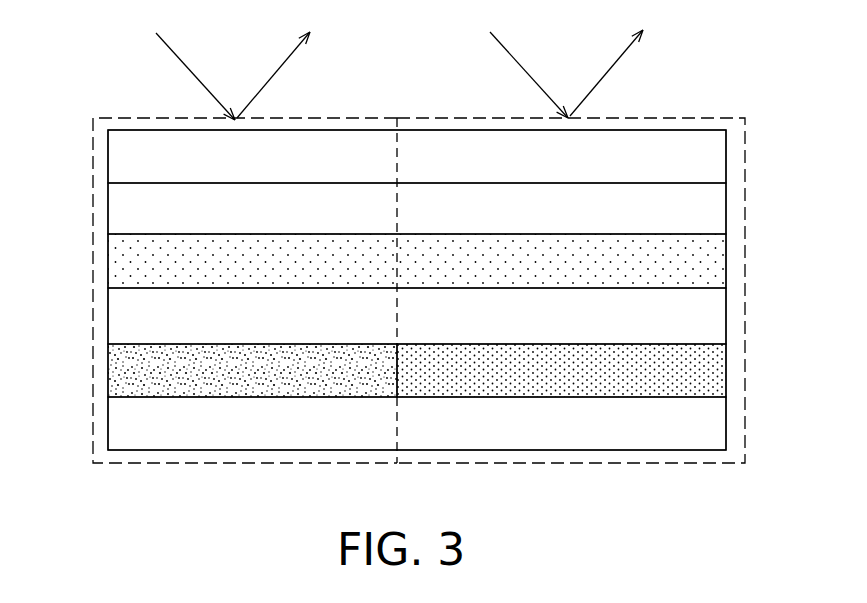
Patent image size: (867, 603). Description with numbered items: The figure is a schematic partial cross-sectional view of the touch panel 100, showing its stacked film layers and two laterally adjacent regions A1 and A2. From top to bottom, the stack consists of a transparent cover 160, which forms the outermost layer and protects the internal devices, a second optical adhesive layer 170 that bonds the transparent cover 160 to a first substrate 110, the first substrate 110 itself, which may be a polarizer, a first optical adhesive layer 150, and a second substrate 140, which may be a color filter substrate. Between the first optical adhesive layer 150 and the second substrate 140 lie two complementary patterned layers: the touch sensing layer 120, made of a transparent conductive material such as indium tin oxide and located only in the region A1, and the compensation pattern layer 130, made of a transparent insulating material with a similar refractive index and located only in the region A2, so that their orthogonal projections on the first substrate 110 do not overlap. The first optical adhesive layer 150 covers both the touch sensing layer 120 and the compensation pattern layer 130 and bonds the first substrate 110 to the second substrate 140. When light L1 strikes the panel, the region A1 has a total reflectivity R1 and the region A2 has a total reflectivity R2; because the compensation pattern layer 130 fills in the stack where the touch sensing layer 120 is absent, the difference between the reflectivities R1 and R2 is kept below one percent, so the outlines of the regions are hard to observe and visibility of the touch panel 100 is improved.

The touch panel 100 is at (726, 529).
The first substrate 110 is at (715, 262).
The touch sensing layer 120 is at (130, 372).
The compensation pattern layer 130 is at (715, 368).
The second substrate 140 is at (717, 422).
The first optical adhesive layer 150 is at (715, 315).
The transparent cover 160 is at (715, 155).
The second optical adhesive layer 170 is at (715, 208).
The region A1 is at (92, 143).
The region A2 is at (703, 117).
The light L1 is at (354, 60).
The reflectivity R1 is at (266, 65).
The reflectivity R2 is at (600, 64).